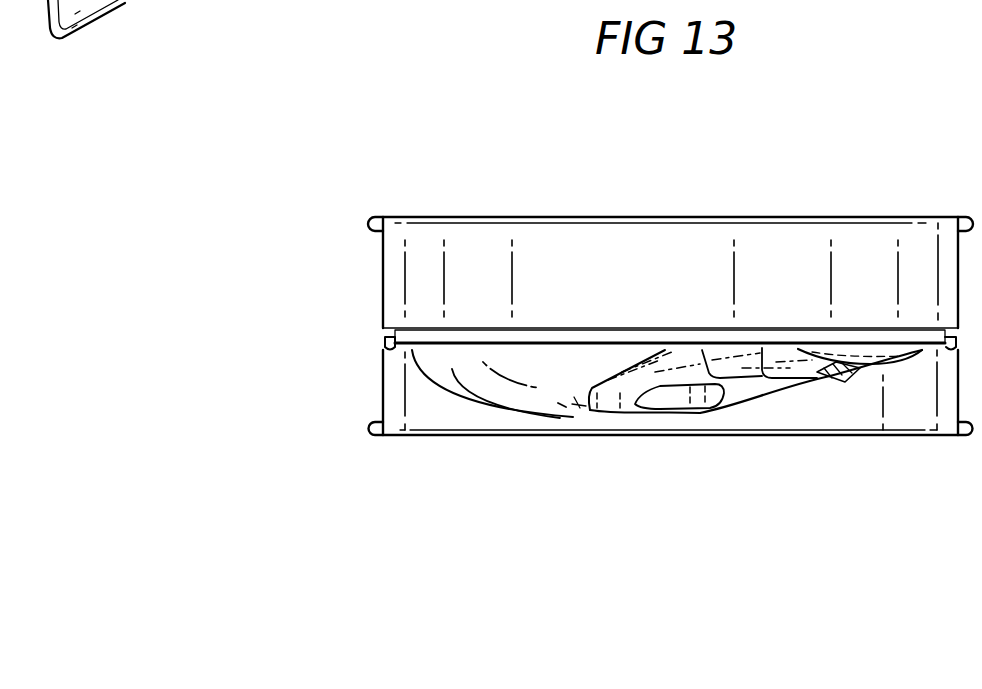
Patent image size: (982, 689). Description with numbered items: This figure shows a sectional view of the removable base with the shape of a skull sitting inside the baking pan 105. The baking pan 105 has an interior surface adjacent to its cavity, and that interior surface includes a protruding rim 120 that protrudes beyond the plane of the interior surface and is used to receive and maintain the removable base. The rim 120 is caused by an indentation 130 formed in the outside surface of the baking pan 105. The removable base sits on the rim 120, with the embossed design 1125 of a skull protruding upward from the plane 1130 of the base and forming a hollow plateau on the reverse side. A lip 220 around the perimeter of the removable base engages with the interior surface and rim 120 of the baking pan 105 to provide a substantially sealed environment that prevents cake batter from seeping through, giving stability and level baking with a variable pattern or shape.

The baking pan 105 is at (370, 222).
The plane 1130 is at (410, 330).
The indentation 130 is at (388, 344).
The lip 220 is at (946, 338).
The protruding rim 120 is at (387, 352).
The embossed design 1125 is at (578, 407).